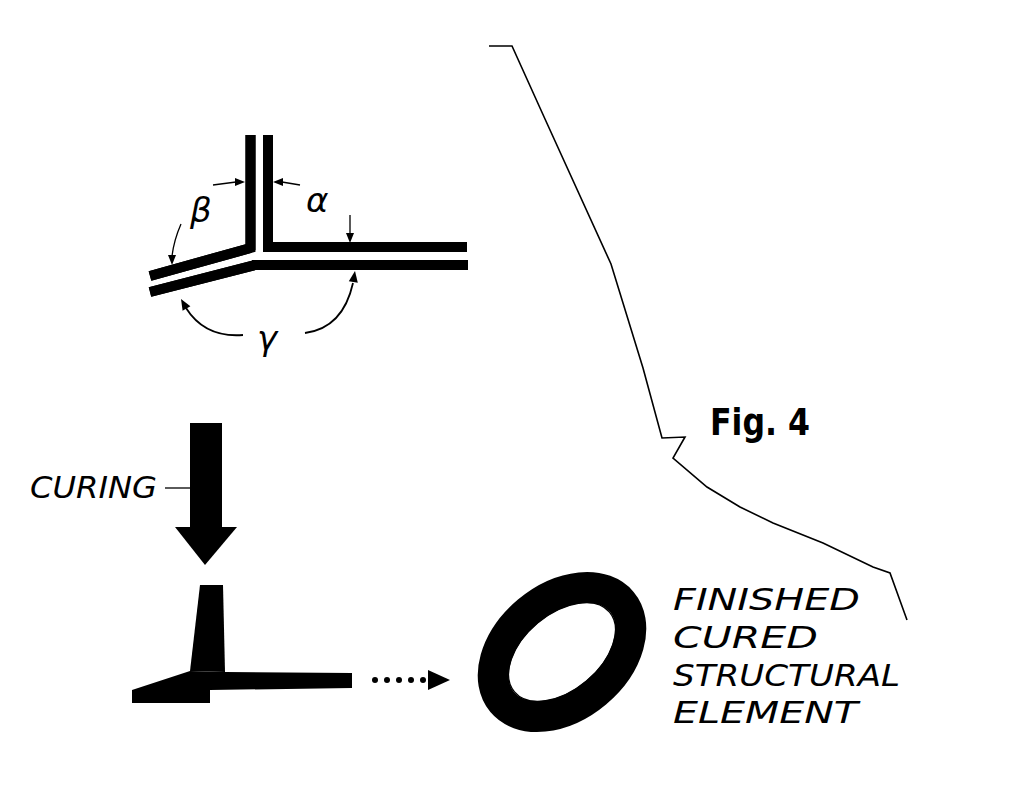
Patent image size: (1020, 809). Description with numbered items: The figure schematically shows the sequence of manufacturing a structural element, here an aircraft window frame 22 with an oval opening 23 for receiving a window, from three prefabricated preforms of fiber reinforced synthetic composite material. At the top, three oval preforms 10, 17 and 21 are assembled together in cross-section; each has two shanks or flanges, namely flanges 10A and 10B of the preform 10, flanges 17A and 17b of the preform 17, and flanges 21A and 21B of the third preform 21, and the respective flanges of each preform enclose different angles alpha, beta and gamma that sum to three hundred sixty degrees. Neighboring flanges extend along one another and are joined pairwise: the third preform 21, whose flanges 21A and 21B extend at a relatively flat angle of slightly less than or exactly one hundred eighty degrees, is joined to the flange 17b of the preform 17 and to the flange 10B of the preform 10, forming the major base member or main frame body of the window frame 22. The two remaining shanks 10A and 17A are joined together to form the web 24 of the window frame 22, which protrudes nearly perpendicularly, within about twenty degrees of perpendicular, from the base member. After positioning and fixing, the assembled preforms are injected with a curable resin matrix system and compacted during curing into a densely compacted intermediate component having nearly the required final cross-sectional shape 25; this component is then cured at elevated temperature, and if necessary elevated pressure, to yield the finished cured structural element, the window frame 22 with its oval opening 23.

The preform 10 is at (404, 170).
The shank or flange of preform 10A is at (274, 138).
The shank or flange of preform 10B is at (462, 238).
The preform 17 is at (152, 174).
The shank or flange of preform 17A is at (245, 138).
The shank or flange of preform 17b is at (152, 272).
The third preform 21 is at (334, 336).
The web or flange of third preform 21A is at (160, 298).
The web or flange of third preform 21B is at (468, 272).
The aircraft window frame 22 is at (608, 587).
The oval opening 23 is at (567, 683).
The web of window frame 24 is at (258, 133).
The final cross-sectional shape 25 is at (253, 680).